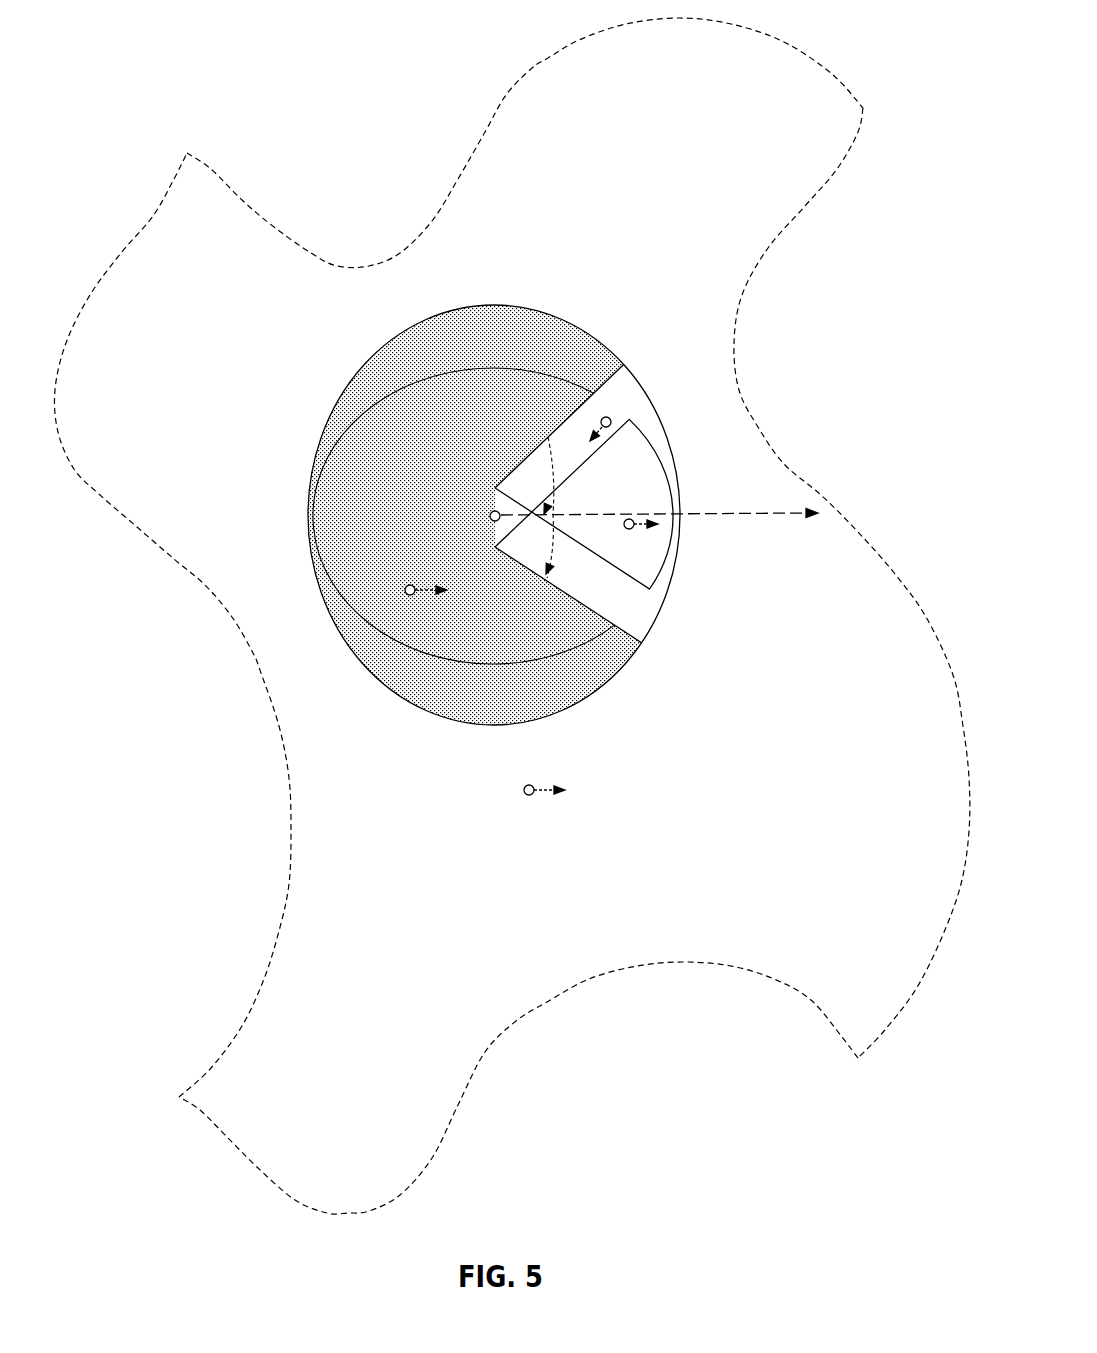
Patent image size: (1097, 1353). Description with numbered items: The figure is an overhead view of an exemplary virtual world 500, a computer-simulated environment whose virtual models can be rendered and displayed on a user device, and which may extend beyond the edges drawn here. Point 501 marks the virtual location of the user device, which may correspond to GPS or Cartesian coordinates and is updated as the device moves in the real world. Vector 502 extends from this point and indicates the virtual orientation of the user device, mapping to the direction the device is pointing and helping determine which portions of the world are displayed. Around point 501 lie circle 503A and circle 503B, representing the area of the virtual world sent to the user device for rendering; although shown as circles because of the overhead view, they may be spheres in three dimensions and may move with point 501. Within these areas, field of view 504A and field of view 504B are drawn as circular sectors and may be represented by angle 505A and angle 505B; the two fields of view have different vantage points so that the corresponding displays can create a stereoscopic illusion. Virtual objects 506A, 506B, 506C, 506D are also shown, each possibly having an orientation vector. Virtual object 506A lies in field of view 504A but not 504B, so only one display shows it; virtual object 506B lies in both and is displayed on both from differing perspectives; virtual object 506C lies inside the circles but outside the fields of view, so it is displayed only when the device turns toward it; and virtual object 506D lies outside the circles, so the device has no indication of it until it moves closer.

The virtual world 500 is at (147, 132).
The point 501 is at (518, 499).
The vector 502 is at (700, 512).
The circle 503A is at (364, 364).
The circle 503B is at (316, 593).
The field of view 504A is at (655, 398).
The field of view 504B is at (676, 581).
The angle 505A is at (552, 457).
The angle 505B is at (552, 517).
The virtual object 506A is at (609, 417).
The virtual object 506B is at (627, 529).
The virtual object 506C is at (408, 595).
The virtual object 506D is at (532, 785).